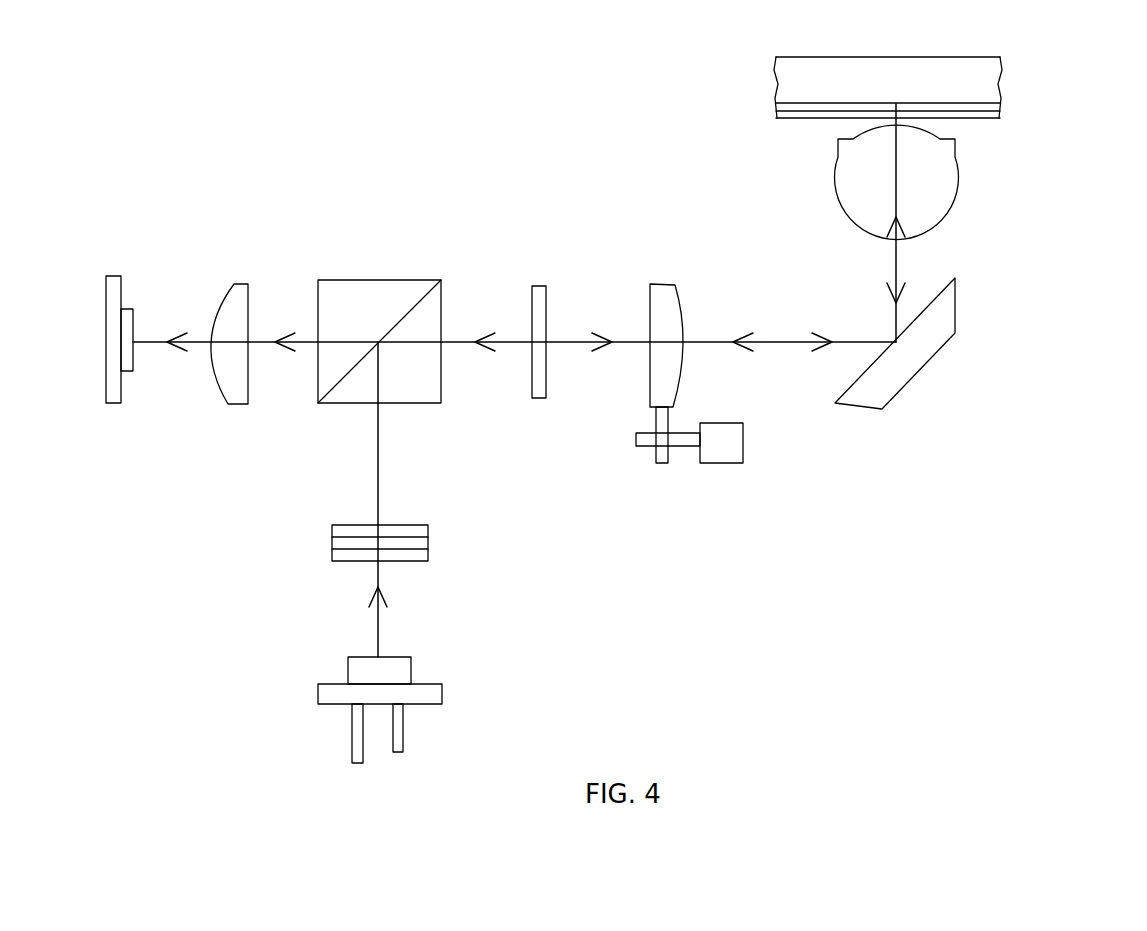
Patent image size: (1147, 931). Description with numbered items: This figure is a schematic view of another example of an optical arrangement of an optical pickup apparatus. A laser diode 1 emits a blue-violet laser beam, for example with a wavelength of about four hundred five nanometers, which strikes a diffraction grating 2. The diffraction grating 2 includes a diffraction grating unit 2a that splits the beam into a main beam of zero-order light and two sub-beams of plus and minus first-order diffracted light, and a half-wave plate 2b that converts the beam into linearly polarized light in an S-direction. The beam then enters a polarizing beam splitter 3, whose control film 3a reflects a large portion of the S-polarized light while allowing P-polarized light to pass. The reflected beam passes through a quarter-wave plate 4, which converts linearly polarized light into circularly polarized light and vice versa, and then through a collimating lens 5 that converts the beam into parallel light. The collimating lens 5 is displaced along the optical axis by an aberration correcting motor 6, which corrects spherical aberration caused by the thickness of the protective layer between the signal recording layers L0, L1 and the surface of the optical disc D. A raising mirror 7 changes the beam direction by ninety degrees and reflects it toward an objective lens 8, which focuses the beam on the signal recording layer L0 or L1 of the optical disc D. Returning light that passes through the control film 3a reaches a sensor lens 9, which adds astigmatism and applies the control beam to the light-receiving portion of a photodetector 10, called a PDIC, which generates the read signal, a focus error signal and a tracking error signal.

The laser diode 1 is at (434, 692).
The diffraction grating 2 is at (380, 561).
The diffraction grating unit 2a is at (428, 548).
The half-wave plate 2b is at (425, 530).
The polarizing beam splitter 3 is at (379, 279).
The control film 3a is at (420, 297).
The quarter-wave plate 4 is at (543, 288).
The collimating lens 5 is at (662, 292).
The aberration correcting motor 6 is at (723, 450).
The raising mirror 7 is at (920, 345).
The objective lens 8 is at (930, 175).
The sensor lens 9 is at (237, 295).
The photodetector 10 is at (115, 395).
The optical disc D is at (890, 114).
The signal recording layer L1 is at (983, 101).
The signal recording layer L0 is at (985, 116).